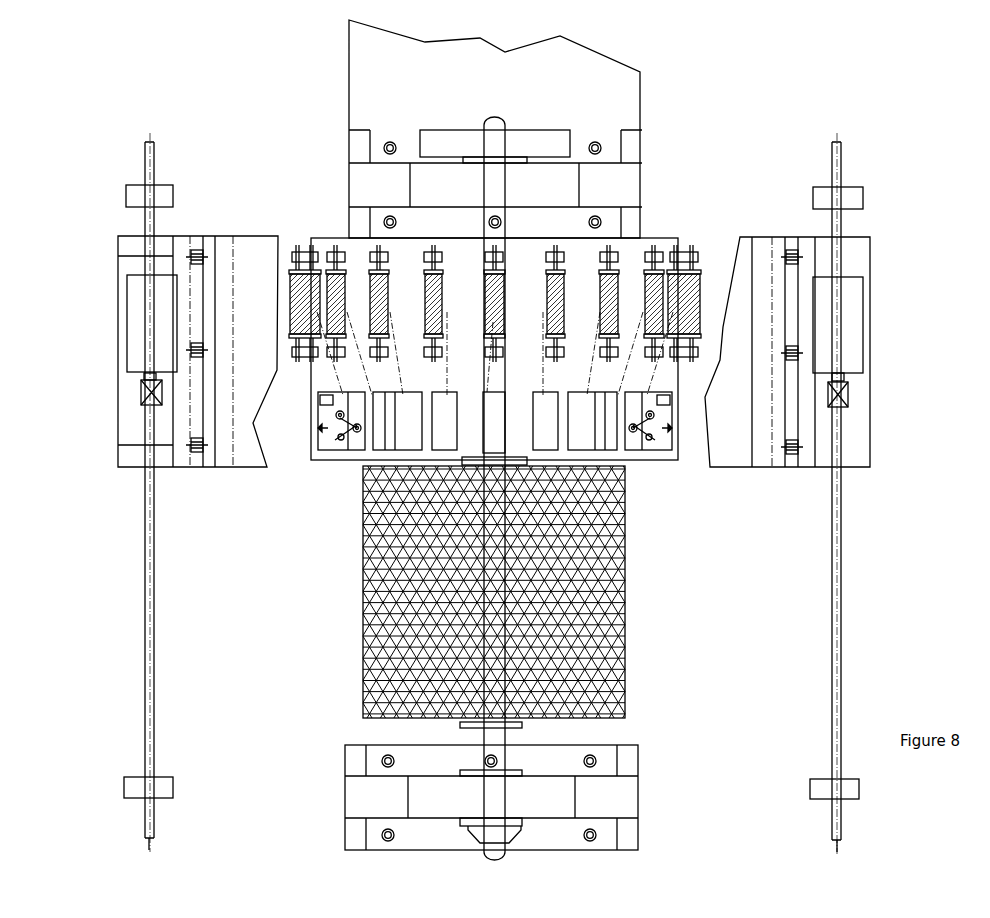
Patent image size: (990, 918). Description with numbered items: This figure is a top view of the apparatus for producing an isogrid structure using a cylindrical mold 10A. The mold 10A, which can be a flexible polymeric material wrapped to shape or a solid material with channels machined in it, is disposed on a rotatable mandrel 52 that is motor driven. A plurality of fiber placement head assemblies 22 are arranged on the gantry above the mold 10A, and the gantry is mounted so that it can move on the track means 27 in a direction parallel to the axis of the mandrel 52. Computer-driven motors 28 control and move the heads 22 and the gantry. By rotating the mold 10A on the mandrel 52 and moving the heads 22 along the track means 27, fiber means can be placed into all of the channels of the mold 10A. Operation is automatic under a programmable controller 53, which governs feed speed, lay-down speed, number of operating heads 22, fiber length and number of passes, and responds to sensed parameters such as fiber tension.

The programmable controller 53 is at (633, 110).
The fiber placement head assembly 22 is at (330, 446).
The cylindrical mold 10A is at (363, 605).
The rotatable mandrel 52 is at (490, 738).
The track means 27 is at (155, 581).
The motor 28 is at (860, 313).